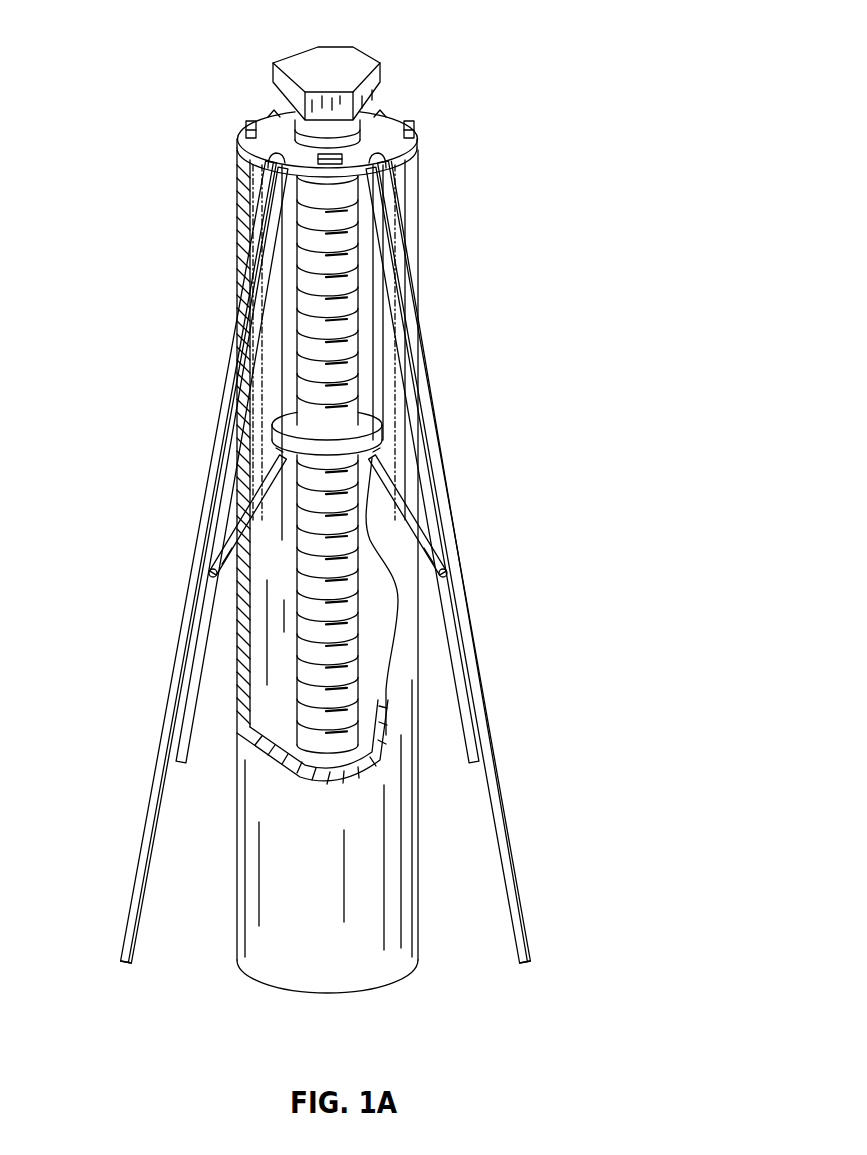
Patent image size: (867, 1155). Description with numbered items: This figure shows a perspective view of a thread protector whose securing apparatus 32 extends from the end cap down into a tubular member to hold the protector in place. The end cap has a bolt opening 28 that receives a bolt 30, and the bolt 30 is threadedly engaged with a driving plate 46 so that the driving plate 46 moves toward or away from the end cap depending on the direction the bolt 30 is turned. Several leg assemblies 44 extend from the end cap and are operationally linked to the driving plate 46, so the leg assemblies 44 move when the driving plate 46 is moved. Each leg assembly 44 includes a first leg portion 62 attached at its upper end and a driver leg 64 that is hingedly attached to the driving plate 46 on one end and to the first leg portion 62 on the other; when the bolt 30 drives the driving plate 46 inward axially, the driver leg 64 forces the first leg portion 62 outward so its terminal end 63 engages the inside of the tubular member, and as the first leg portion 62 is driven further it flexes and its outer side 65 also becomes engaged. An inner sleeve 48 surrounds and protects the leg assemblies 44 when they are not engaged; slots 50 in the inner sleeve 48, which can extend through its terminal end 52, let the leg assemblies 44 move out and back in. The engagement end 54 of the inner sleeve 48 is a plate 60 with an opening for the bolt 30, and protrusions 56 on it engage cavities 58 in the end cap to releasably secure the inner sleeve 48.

The bolt opening 28 is at (328, 133).
The bolt 30 is at (333, 279).
The securing apparatus 32 is at (524, 673).
The leg assemblies 44 is at (161, 572).
The driving plate 46 is at (360, 445).
The inner sleeve 48 is at (418, 963).
The slots 50 is at (260, 440).
The terminal end 52 is at (305, 993).
The engagement end 54 is at (241, 160).
The protrusions 56 is at (255, 124).
The cavities 58 is at (317, 160).
The plate 60 is at (387, 143).
The first leg portion 62 is at (147, 863).
The terminal end 63 is at (128, 967).
The driver leg 64 is at (418, 537).
The outer side 65 is at (152, 782).